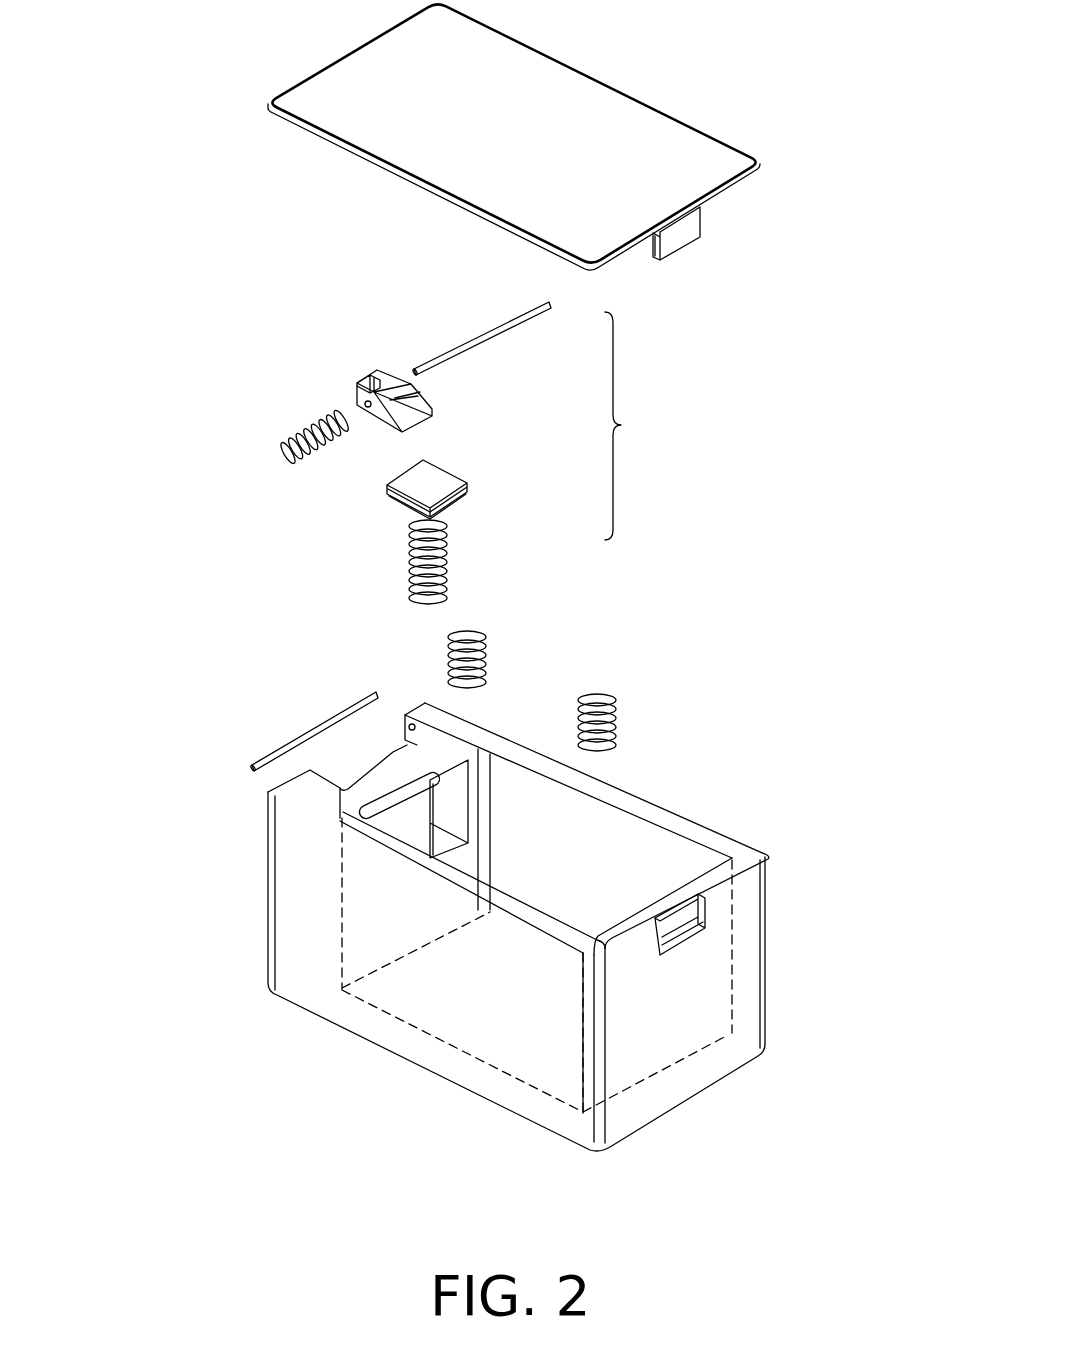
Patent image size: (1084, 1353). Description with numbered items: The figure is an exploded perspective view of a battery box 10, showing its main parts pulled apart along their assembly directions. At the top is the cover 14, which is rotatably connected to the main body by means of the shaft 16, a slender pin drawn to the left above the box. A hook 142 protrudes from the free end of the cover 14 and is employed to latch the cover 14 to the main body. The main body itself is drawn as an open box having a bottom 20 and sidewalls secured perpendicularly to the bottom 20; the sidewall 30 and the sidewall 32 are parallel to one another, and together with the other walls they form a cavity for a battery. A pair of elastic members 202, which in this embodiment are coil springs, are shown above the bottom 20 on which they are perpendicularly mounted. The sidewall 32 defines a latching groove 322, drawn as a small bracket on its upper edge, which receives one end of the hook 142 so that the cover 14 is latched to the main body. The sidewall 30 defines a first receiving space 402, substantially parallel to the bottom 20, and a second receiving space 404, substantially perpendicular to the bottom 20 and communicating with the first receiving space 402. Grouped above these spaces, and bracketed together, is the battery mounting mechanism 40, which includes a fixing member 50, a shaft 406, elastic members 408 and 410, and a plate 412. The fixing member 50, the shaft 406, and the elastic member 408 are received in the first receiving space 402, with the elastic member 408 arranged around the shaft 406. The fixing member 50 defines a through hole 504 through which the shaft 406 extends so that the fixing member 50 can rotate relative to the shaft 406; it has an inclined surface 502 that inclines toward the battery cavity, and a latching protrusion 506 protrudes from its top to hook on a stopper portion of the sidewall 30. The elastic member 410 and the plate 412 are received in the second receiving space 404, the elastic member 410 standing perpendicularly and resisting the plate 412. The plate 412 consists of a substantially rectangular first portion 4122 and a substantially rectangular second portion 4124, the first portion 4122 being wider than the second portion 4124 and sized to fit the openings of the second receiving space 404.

The battery box 10 is at (213, 60).
The cover 14 is at (602, 143).
The hook 142 is at (680, 228).
The shaft 16 is at (318, 730).
The bottom 20 is at (590, 934).
The elastic members 202 is at (483, 655).
The sidewall 30 is at (467, 859).
The sidewall 32 is at (737, 998).
The latching groove 322 is at (677, 917).
The battery mounting mechanism 40 is at (633, 426).
The first receiving space 402 is at (397, 800).
The second receiving space 404 is at (455, 818).
The shaft 406 is at (480, 340).
The elastic member 408 is at (298, 432).
The elastic member 410 is at (447, 550).
The plate 412 is at (411, 505).
The first portion 4122 is at (398, 497).
The second portion 4124 is at (413, 480).
The fixing member 50 is at (382, 344).
The inclined surface 502 is at (410, 402).
The through hole 504 is at (365, 396).
The latching protrusion 506 is at (367, 380).